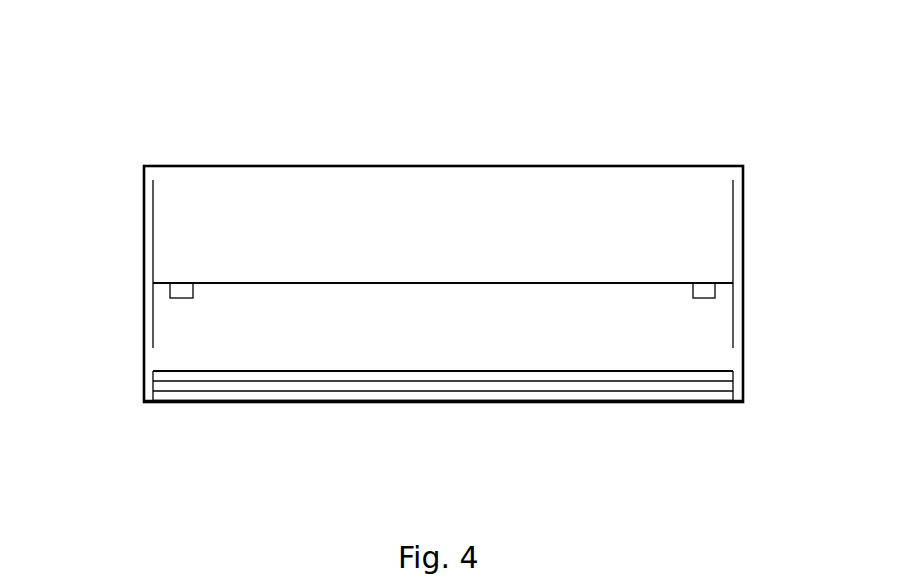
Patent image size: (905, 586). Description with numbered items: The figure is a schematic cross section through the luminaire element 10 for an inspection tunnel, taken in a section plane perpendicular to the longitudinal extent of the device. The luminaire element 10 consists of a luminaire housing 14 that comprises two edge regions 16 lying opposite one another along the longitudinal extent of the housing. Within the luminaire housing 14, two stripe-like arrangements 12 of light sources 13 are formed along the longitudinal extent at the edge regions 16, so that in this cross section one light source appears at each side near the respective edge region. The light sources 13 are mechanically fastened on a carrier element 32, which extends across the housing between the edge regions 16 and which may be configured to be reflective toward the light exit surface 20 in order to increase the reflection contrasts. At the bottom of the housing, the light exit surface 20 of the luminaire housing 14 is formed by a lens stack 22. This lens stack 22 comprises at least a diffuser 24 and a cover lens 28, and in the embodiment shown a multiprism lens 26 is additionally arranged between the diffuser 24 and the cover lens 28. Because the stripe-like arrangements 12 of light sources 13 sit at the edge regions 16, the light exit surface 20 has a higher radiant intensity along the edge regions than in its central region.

The luminaire element 10 is at (434, 255).
The luminaire housing 14 is at (210, 166).
The edge regions 16 is at (152, 246).
The stripe-like arrangements 12 is at (443, 257).
The light sources 13 is at (181, 283).
The carrier element 32 is at (385, 283).
The diffuser 24 is at (203, 376).
The multiprism lens 26 is at (282, 388).
The cover lens 28 is at (348, 399).
The lens stack 22 is at (416, 402).
The light exit surface 20 is at (557, 401).